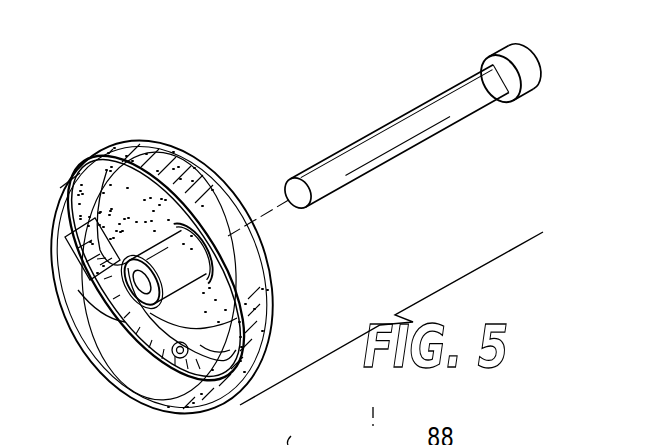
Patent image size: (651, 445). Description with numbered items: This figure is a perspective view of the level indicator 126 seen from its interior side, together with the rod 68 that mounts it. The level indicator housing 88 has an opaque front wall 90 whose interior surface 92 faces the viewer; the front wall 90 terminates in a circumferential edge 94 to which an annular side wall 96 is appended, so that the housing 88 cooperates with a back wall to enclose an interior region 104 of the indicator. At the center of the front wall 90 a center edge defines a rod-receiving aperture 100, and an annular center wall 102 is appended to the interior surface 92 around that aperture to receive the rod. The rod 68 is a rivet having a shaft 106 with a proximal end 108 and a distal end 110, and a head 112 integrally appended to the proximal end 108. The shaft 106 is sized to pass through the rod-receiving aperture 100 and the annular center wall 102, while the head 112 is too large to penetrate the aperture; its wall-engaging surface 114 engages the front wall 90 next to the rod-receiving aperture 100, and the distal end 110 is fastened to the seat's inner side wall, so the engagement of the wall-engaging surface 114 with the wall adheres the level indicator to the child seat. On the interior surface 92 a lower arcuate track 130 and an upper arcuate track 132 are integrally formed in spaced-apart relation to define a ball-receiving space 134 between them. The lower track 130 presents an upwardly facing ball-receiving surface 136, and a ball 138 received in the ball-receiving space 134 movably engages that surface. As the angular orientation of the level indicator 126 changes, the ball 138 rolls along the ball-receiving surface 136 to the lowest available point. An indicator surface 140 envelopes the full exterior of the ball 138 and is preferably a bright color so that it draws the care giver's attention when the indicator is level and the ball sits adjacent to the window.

The rod 68 is at (369, 127).
The level indicator housing 88 is at (183, 149).
The front wall 90 is at (107, 185).
The interior surface 92 is at (110, 204).
The circumferential edge 94 is at (268, 270).
The annular side wall 96 is at (153, 147).
The rod-receiving aperture 100 is at (143, 277).
The annular center wall 102 is at (180, 247).
The interior region 104 is at (121, 194).
The shaft 106 is at (403, 140).
The proximal end 108 is at (505, 79).
The distal end 110 is at (315, 194).
The head 112 is at (513, 44).
The wall-engaging surface 114 is at (492, 60).
The level indicator 126 is at (75, 144).
The lower arcuate track 130 is at (158, 372).
The upper arcuate track 132 is at (207, 328).
The ball-receiving space 134 is at (214, 362).
The ball-receiving surface 136 is at (85, 300).
The ball 138 is at (125, 322).
The indicator surface 140 is at (202, 378).